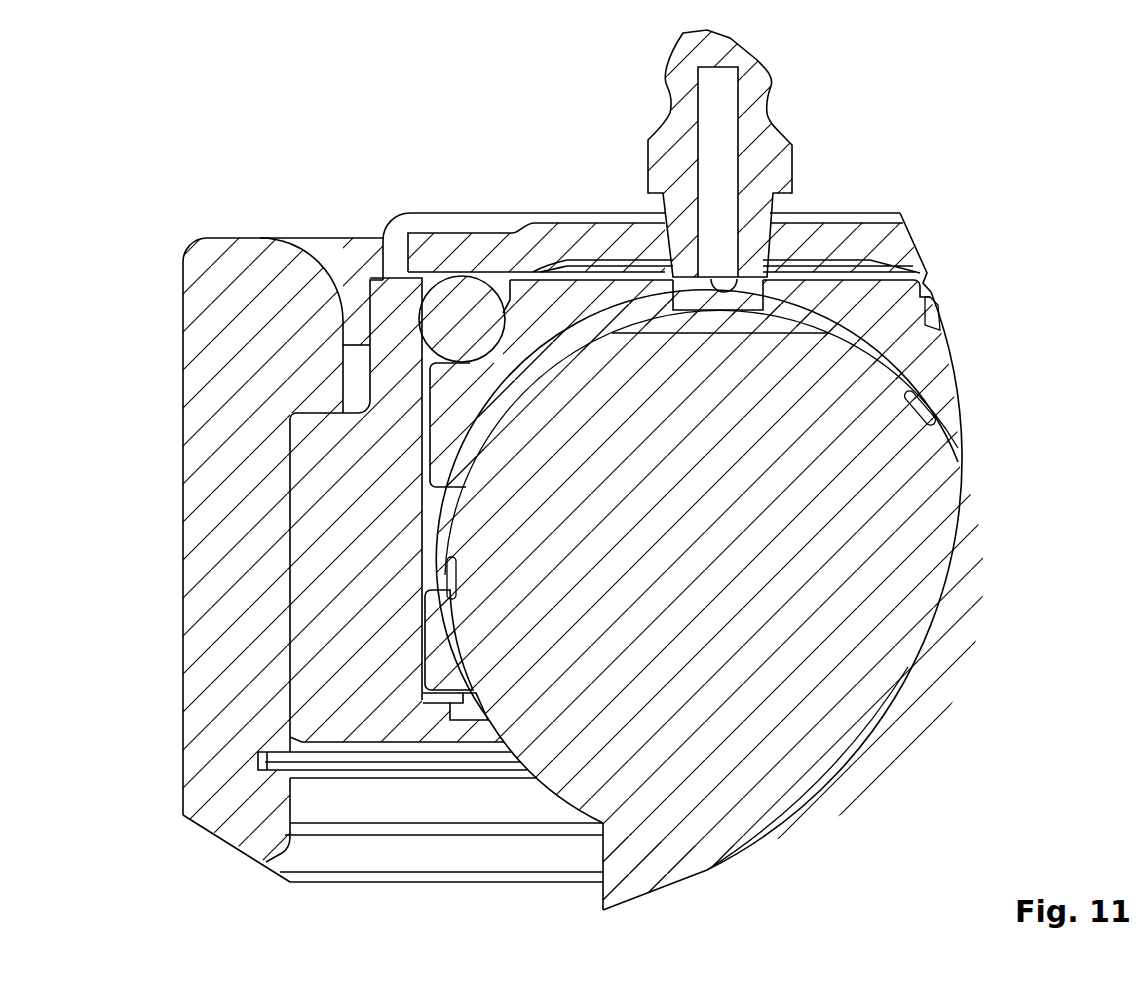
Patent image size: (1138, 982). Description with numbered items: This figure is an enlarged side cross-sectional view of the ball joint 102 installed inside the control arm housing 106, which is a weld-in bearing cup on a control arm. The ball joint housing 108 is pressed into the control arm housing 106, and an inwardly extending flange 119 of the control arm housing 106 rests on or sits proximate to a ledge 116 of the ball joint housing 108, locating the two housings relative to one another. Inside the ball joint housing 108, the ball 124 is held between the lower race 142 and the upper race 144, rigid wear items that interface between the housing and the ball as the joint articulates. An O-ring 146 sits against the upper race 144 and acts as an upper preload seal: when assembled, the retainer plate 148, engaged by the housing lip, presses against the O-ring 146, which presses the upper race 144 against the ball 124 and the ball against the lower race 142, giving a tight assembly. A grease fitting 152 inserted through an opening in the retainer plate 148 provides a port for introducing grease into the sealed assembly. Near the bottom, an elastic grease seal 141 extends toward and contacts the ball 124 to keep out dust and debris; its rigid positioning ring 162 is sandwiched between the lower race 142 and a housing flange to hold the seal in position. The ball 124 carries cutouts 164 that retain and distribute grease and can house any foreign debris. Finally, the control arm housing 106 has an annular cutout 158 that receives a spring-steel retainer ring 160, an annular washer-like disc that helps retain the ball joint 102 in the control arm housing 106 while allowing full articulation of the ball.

The ball joint 102 is at (1018, 125).
The control arm housing 106 is at (265, 347).
The ball joint housing 108 is at (348, 497).
The ledge 116 is at (303, 410).
The flange 119 is at (358, 370).
The ball 124 is at (807, 572).
The grease seal 141 is at (463, 707).
The lower race 142 is at (443, 635).
The upper race 144 is at (555, 328).
The O-ring 146 is at (460, 325).
The retainer plate 148 is at (502, 257).
The grease fitting 152 is at (716, 210).
The cutout 158 is at (263, 767).
The retainer ring 160 is at (367, 767).
The positioning ring 162 is at (467, 703).
The cutouts 164 is at (455, 580).